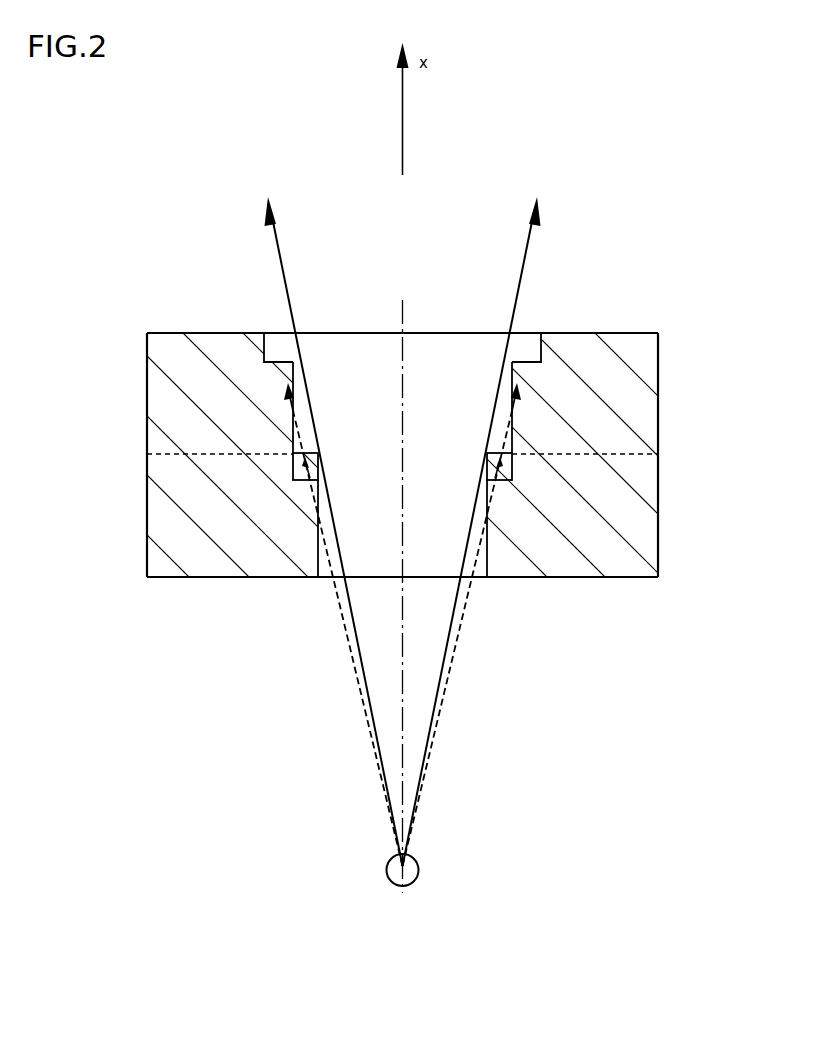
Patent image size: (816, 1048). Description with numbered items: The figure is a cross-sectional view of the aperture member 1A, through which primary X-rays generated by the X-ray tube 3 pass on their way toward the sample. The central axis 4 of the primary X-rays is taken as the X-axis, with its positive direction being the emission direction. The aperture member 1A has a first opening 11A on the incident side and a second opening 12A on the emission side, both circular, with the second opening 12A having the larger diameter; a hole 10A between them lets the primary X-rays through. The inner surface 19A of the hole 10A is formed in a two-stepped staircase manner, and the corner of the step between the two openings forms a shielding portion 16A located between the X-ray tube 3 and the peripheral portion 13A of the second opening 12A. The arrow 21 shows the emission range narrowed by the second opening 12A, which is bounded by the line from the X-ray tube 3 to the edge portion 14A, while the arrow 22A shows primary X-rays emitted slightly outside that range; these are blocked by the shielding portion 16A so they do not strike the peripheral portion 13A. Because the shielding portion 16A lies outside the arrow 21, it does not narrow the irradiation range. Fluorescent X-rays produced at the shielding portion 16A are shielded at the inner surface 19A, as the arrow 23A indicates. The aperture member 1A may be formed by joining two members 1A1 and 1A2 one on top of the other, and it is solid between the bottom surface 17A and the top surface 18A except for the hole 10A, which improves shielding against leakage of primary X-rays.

The aperture member 1A is at (687, 178).
The member 1A1 is at (660, 357).
The member 1A2 is at (660, 473).
The hole 10A is at (445, 503).
The first opening 11A is at (477, 580).
The second opening 12A is at (443, 331).
The peripheral portion 13A is at (543, 348).
The edge portion 14A is at (298, 331).
The shielding portion 16A is at (295, 467).
The bottom surface 17A is at (195, 578).
The top surface 18A is at (197, 331).
The inner surface 19A is at (297, 377).
The arrow 21 is at (279, 243).
The arrow 22A is at (343, 623).
The arrow 23A is at (295, 442).
The X-ray tube 3 is at (386, 870).
The central axis 4 is at (402, 668).